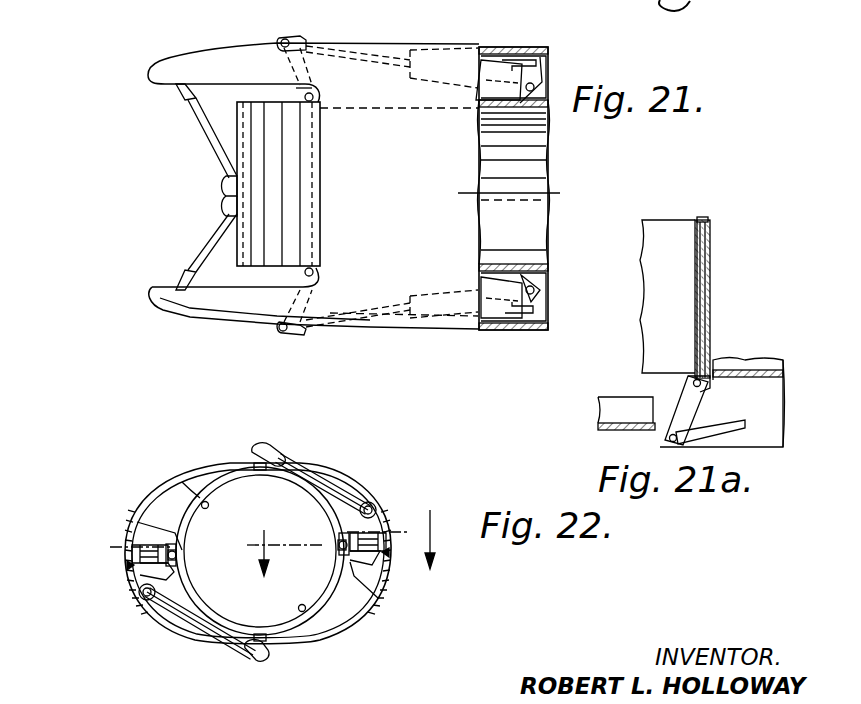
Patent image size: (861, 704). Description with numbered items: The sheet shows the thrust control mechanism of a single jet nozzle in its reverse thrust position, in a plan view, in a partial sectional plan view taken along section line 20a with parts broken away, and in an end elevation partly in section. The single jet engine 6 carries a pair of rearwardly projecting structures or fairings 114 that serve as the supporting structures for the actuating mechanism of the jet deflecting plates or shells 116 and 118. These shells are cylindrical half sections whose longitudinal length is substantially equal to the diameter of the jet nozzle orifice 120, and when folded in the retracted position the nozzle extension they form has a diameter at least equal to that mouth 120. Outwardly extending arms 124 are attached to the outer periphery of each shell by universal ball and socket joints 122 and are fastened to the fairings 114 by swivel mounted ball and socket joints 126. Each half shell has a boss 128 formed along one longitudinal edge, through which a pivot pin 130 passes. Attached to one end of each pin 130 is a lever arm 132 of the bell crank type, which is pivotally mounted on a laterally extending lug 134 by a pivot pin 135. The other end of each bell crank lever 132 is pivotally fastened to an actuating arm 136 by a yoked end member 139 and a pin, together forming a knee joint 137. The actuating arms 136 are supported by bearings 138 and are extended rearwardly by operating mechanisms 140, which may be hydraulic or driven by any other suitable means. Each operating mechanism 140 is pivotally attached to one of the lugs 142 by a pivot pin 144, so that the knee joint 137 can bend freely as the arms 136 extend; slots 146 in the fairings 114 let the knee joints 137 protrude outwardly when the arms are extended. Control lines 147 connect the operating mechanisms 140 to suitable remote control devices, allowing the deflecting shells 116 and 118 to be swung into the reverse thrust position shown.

In FIG. 21, the single jet engine 6 is at (520, 188).
In FIG. 22, the single jet engine 6 is at (191, 485).
In FIG. 22, the section line 20a is at (287, 531).
In FIG. 21, the fairing 114 is at (165, 74).
In FIG. 22, the fairing 114 is at (170, 538).
In FIG. 21A, the jet deflecting shell 116 is at (664, 228).
In FIG. 22, the jet deflecting shell 116 is at (292, 635).
In FIG. 21, the jet deflecting shell 118 is at (258, 228).
In FIG. 22, the jet deflecting shell 118 is at (232, 478).
In FIG. 21, the jet nozzle orifice 120 is at (510, 106).
In FIG. 21A, the jet nozzle orifice 120 is at (742, 370).
In FIG. 22, the jet nozzle orifice 120 is at (208, 505).
In FIG. 21, the universal ball and socket joint 122 is at (220, 198).
In FIG. 22, the universal ball and socket joint 122 is at (268, 456).
In FIG. 21, the outwardly extending arm 124 is at (200, 128).
In FIG. 22, the outwardly extending arm 124 is at (333, 478).
In FIG. 21, the swivel mounted ball and socket joint 126 is at (183, 92).
In FIG. 22, the swivel mounted ball and socket joint 126 is at (372, 503).
In FIG. 21A, the boss 128 is at (710, 262).
In FIG. 22, the boss 128 is at (182, 563).
In FIG. 21A, the pivot pin 130 is at (706, 218).
In FIG. 22, the pivot pin 130 is at (178, 556).
In FIG. 21, the lever arm 132 is at (292, 72).
In FIG. 21A, the lever arm 132 is at (680, 410).
In FIG. 22, the lever arm 132 is at (162, 567).
In FIG. 21, the laterally extending lug 134 is at (296, 89).
In FIG. 21A, the laterally extending lug 134 is at (676, 406).
In FIG. 22, the laterally extending lug 134 is at (150, 537).
In FIG. 21, the pivot pin 135 is at (315, 97).
In FIG. 21A, the pivot pin 135 is at (694, 379).
In FIG. 22, the pivot pin 135 is at (338, 538).
In FIG. 21, the actuating arm 136 is at (383, 50).
In FIG. 21A, the actuating arm 136 is at (730, 426).
In FIG. 21, the knee joint 137 is at (275, 37).
In FIG. 22, the knee joint 137 is at (128, 565).
In FIG. 21, the bearing 138 is at (412, 55).
In FIG. 21, the yoked end member 139 is at (308, 24).
In FIG. 21A, the yoked end member 139 is at (682, 444).
In FIG. 22, the yoked end member 139 is at (135, 556).
In FIG. 21, the operating mechanism 140 is at (478, 45).
In FIG. 21, the lug 142 is at (541, 76).
In FIG. 21, the pivot pin 144 is at (536, 88).
In FIG. 21A, the slot 146 is at (660, 437).
In FIG. 21, the control line 147 is at (520, 64).